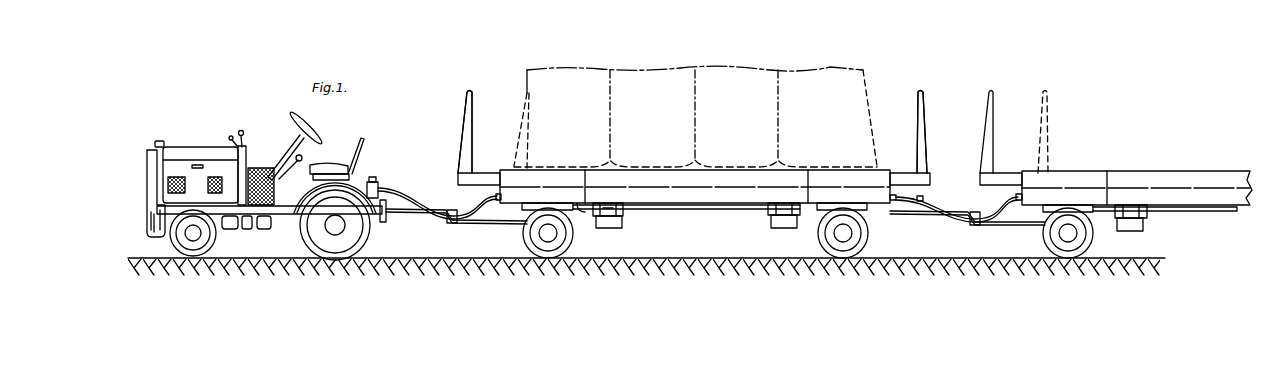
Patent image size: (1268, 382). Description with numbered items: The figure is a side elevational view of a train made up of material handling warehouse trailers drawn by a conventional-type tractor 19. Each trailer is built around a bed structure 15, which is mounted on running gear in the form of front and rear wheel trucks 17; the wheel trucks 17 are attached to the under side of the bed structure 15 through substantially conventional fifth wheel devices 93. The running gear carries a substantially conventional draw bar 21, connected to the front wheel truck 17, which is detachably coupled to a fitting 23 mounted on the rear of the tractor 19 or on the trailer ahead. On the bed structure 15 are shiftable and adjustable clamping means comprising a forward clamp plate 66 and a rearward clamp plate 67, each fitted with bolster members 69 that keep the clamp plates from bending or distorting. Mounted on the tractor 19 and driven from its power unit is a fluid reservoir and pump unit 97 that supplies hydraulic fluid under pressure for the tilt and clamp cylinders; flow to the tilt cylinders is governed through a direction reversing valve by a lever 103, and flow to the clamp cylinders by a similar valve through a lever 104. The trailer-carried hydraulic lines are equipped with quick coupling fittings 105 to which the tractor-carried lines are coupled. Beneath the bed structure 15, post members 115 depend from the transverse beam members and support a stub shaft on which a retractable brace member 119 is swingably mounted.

The bed structure 15 is at (710, 155).
The wheel truck 17 is at (528, 237).
The tractor 19 is at (190, 143).
The draw bar 21 is at (418, 216).
The fitting 23 is at (378, 188).
The forward clamp plate 66 is at (472, 121).
The rearward clamp plate 67 is at (921, 134).
The bolster member 69 is at (461, 147).
The fifth wheel device 93 is at (543, 206).
The fluid reservoir and pump unit 97 is at (251, 160).
The lever 103 is at (230, 136).
The lever 104 is at (243, 132).
The fitting 105 is at (924, 199).
The post member 115 is at (622, 214).
The brace member 119 is at (606, 228).